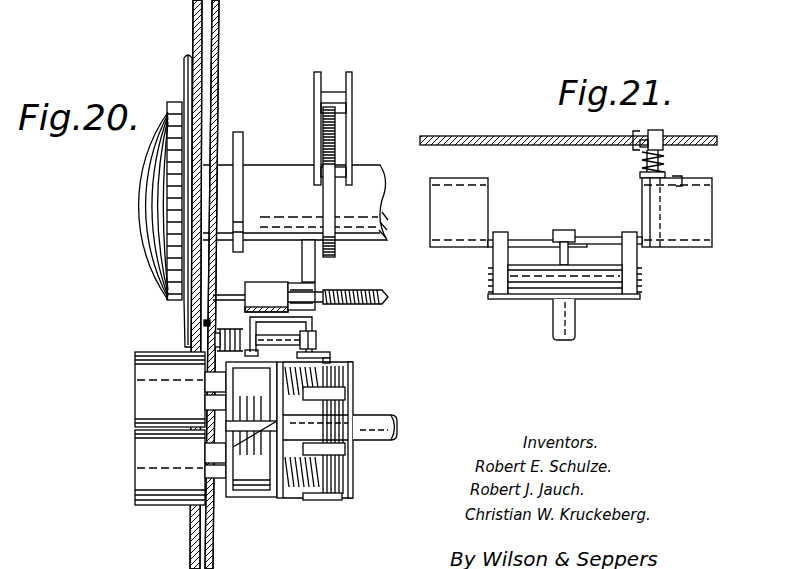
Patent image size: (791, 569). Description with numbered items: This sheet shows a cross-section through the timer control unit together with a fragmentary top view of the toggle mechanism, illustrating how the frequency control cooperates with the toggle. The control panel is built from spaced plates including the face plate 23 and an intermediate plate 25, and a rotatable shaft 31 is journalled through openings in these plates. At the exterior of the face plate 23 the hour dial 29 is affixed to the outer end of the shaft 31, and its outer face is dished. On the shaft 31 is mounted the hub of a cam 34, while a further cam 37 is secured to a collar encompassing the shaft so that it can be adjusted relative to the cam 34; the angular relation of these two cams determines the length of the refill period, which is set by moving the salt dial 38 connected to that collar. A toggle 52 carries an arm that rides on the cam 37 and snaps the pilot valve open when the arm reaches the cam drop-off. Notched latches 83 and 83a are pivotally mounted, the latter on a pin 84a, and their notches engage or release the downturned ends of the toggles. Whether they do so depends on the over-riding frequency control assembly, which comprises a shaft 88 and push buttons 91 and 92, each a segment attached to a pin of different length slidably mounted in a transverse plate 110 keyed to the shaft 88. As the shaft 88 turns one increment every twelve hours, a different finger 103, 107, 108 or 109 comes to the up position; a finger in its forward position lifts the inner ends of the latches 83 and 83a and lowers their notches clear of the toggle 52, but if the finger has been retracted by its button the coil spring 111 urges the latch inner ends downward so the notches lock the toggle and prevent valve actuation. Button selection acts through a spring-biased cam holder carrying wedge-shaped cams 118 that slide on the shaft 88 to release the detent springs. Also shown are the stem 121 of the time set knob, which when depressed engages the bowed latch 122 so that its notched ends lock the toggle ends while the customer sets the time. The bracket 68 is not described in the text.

In FIG. 20, the face plate 23 is at (193, 6).
In FIG. 20, the intermediate plate 25 is at (219, 18).
In FIG. 21, the intermediate plate 25 is at (506, 136).
In FIG. 20, the hour dial 29 is at (172, 292).
In FIG. 20, the rotatable shaft 31 is at (375, 165).
In FIG. 20, the cam 34 is at (330, 216).
In FIG. 20, the cam 37 is at (243, 135).
In FIG. 20, the salt dial 38 is at (142, 215).
In FIG. 20, the toggle 52 is at (312, 262).
In FIG. 20, the bracket 68 is at (314, 80).
In FIG. 21, the notched latch 83 is at (460, 250).
In FIG. 20, the notched latch 83a is at (312, 321).
In FIG. 21, the notched latch 83a is at (695, 250).
In FIG. 20, the pin 84a is at (306, 340).
In FIG. 21, the pin 84a is at (656, 135).
In FIG. 20, the shaft 88 is at (395, 418).
In FIG. 21, the shaft 88 is at (562, 340).
In FIG. 20, the push button 91 is at (140, 470).
In FIG. 20, the push button 92 is at (140, 383).
In FIG. 20, the finger 103 is at (345, 393).
In FIG. 21, the finger 103 is at (500, 292).
In FIG. 20, the finger 107 is at (335, 453).
In FIG. 20, the finger 108 is at (300, 499).
In FIG. 20, the finger 109 is at (330, 355).
In FIG. 21, the finger 109 is at (573, 265).
In FIG. 20, the transverse plate 110 is at (276, 498).
In FIG. 20, the coil spring 111 is at (226, 340).
In FIG. 21, the coil spring 111 is at (642, 162).
In FIG. 20, the wedge-shaped cam 118 is at (251, 492).
In FIG. 20, the stem 121 is at (355, 292).
In FIG. 20, the bowed latch 122 is at (268, 288).